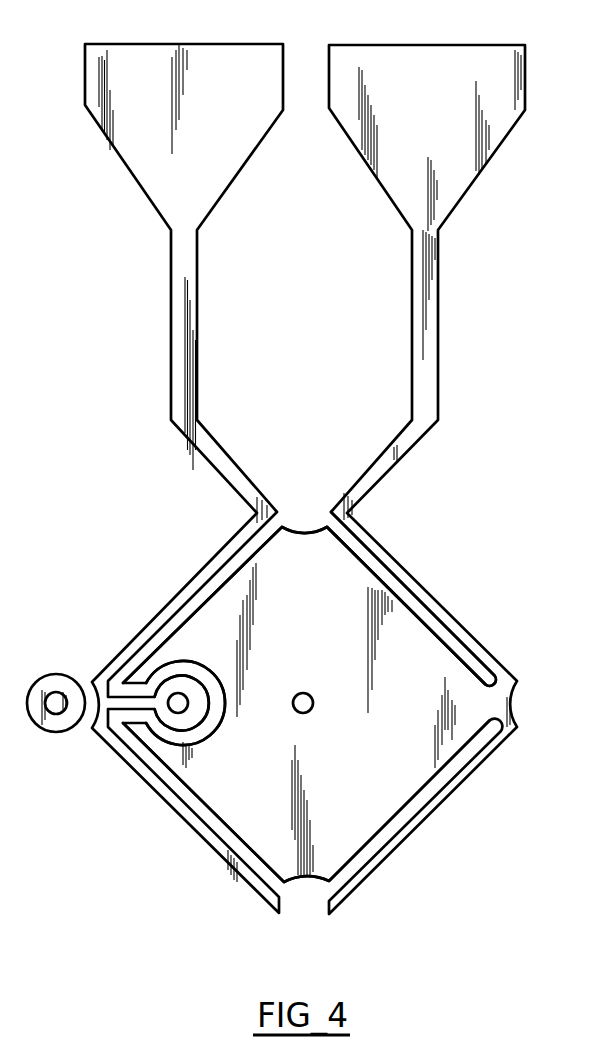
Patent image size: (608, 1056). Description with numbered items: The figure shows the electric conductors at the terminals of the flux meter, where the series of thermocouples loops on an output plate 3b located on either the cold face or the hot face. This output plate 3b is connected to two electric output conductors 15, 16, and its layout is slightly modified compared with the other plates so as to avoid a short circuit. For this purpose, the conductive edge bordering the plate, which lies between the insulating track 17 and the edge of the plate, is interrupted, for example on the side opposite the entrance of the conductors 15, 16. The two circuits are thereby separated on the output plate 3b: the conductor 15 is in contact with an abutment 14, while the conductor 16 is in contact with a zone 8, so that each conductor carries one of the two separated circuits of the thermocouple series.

The electric output conductor 15 is at (222, 143).
The electric output conductor 16 is at (463, 146).
The insulating track 17 is at (411, 603).
The output plate 3b is at (402, 770).
The abutment 14 is at (176, 701).
The zone 8 is at (313, 703).